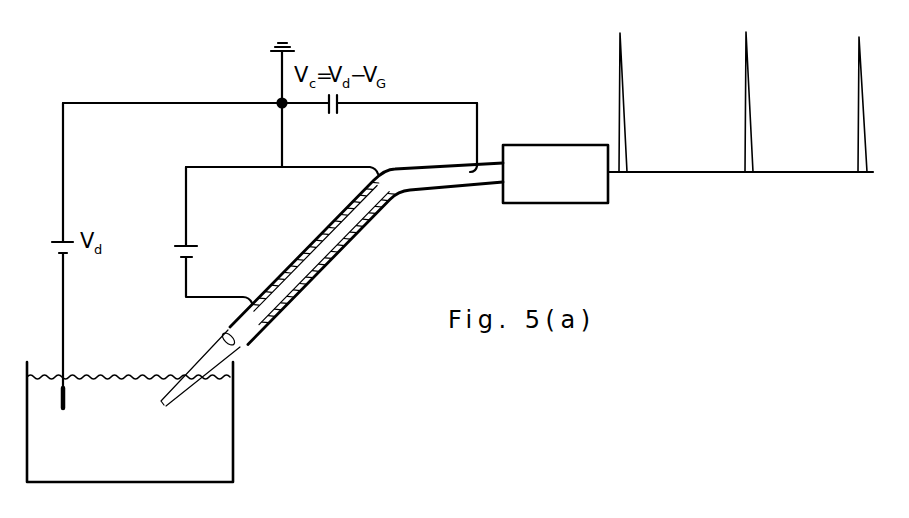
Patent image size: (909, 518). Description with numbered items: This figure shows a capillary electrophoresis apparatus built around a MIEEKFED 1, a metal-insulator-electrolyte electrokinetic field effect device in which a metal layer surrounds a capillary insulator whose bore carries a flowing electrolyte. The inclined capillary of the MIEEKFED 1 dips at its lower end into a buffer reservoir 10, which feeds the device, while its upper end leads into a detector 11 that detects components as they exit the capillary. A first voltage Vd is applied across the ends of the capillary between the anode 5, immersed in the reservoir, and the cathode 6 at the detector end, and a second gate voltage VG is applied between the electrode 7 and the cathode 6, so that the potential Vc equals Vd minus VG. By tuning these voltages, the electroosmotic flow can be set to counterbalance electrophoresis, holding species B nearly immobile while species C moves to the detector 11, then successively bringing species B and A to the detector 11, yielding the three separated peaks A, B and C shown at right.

The MIEEKFED 1 is at (332, 284).
The anode 5 is at (52, 400).
The cathode 6 is at (483, 137).
The electrode 7 is at (205, 235).
The buffer reservoir 10 is at (130, 422).
The detector 11 is at (688, 117).